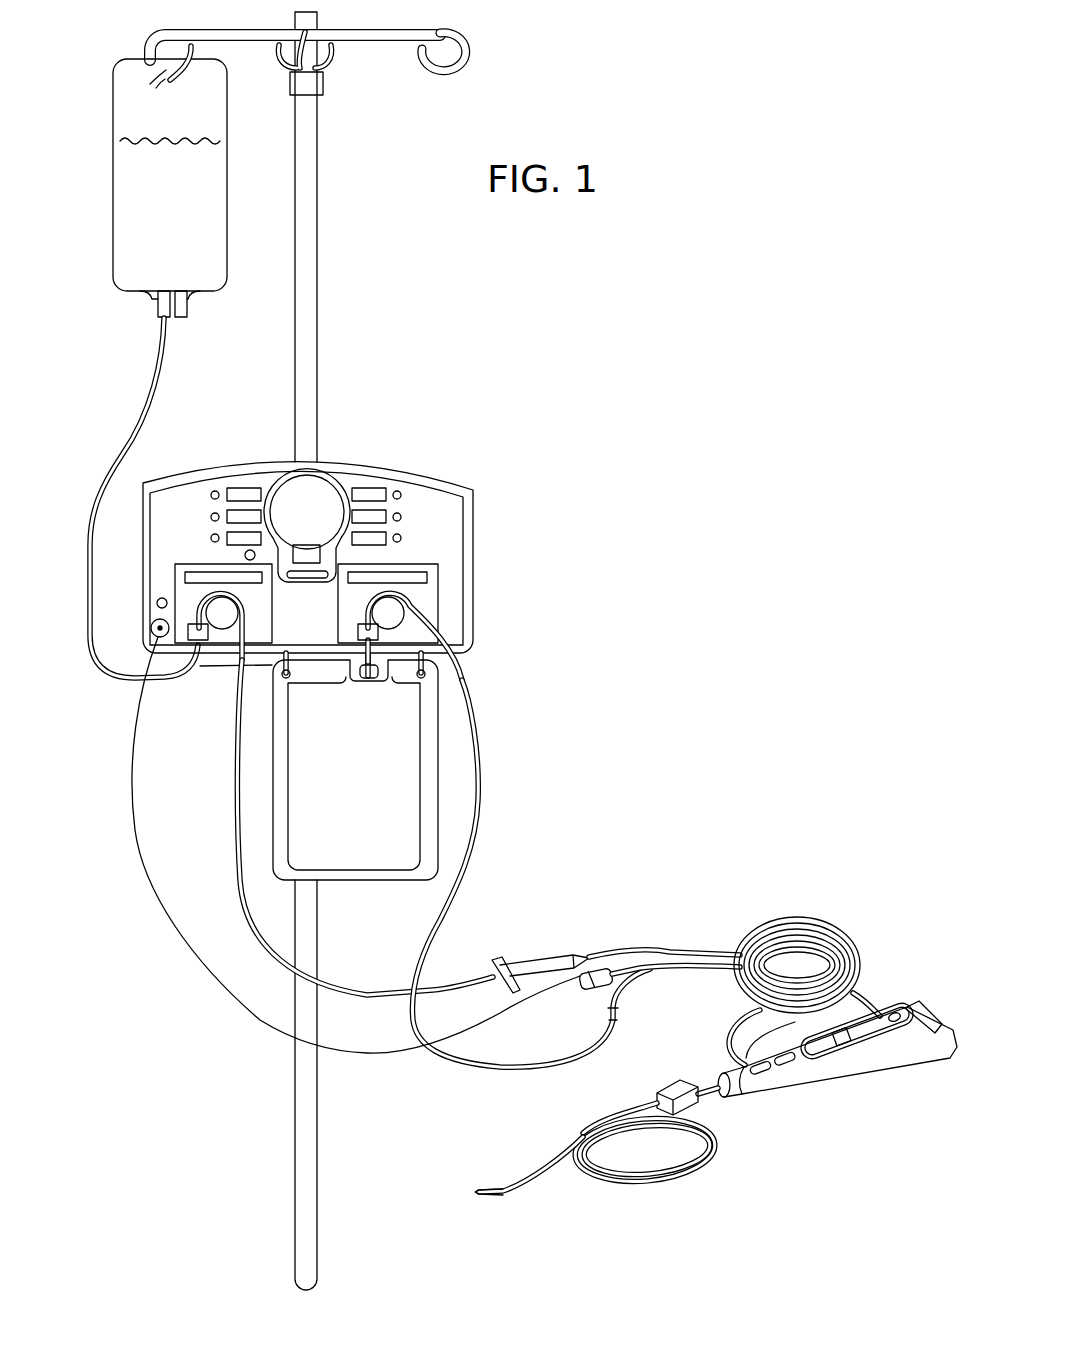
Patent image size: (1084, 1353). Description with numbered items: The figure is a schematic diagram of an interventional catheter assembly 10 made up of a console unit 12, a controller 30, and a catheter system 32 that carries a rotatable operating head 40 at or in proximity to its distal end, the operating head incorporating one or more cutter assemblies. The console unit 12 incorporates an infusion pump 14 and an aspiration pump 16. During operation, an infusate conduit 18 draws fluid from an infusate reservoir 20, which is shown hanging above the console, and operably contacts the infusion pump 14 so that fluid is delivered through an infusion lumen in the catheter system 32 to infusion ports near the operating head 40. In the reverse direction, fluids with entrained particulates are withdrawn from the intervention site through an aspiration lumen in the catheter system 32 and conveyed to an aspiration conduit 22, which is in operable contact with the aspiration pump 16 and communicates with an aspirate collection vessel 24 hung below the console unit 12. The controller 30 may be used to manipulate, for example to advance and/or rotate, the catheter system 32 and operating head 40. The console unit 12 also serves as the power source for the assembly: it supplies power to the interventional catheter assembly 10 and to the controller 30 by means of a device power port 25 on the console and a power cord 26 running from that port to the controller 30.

The interventional catheter assembly 10 is at (666, 610).
The console unit 12 is at (438, 522).
The infusion pump 14 is at (190, 595).
The aspiration pump 16 is at (417, 600).
The infusate conduit 18 is at (232, 845).
The infusate reservoir 20 is at (157, 212).
The aspiration conduit 22 is at (470, 860).
The aspirate collection vessel 24 is at (352, 798).
The device power port 25 is at (150, 627).
The power cord 26 is at (253, 1010).
The controller 30 is at (847, 1077).
The catheter system 32 is at (670, 1182).
The operating head 40 is at (465, 1213).